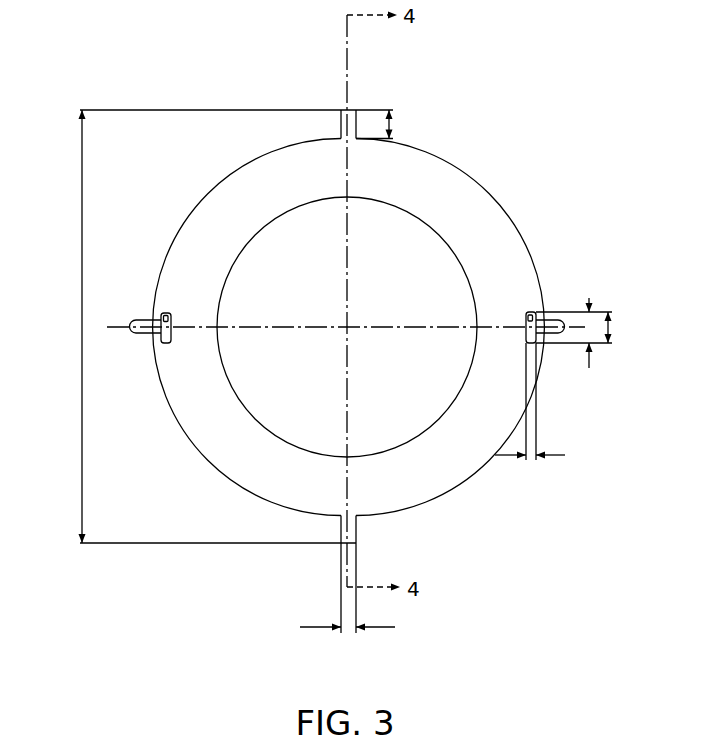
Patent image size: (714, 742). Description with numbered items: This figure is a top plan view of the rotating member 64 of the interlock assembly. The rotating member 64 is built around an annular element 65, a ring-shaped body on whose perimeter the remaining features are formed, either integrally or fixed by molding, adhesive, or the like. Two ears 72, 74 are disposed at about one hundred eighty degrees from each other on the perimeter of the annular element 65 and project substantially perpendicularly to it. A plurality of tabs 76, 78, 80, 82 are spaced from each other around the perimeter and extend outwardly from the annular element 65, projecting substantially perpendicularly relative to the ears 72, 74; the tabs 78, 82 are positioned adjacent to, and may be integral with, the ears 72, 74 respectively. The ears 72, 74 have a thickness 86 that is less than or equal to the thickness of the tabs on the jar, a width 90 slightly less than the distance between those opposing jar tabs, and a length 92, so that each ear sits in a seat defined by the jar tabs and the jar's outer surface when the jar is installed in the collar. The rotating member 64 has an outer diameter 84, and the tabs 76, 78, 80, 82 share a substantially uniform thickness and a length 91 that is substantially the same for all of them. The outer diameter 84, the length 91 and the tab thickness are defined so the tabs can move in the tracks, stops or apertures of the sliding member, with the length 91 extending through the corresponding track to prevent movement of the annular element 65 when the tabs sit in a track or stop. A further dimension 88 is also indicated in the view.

The rotating member 64 is at (458, 198).
The annular element 65 is at (218, 449).
The ear 72 is at (167, 315).
The ear 74 is at (531, 311).
The tab 76 is at (354, 107).
The tab 78 is at (141, 322).
The tab 80 is at (358, 522).
The tab 82 is at (560, 320).
The outer diameter 84 is at (82, 328).
The thickness 86 is at (555, 460).
The slot width dimension 88 is at (318, 630).
The width 90 is at (612, 327).
The length 91 is at (391, 126).
The length 92 is at (590, 352).